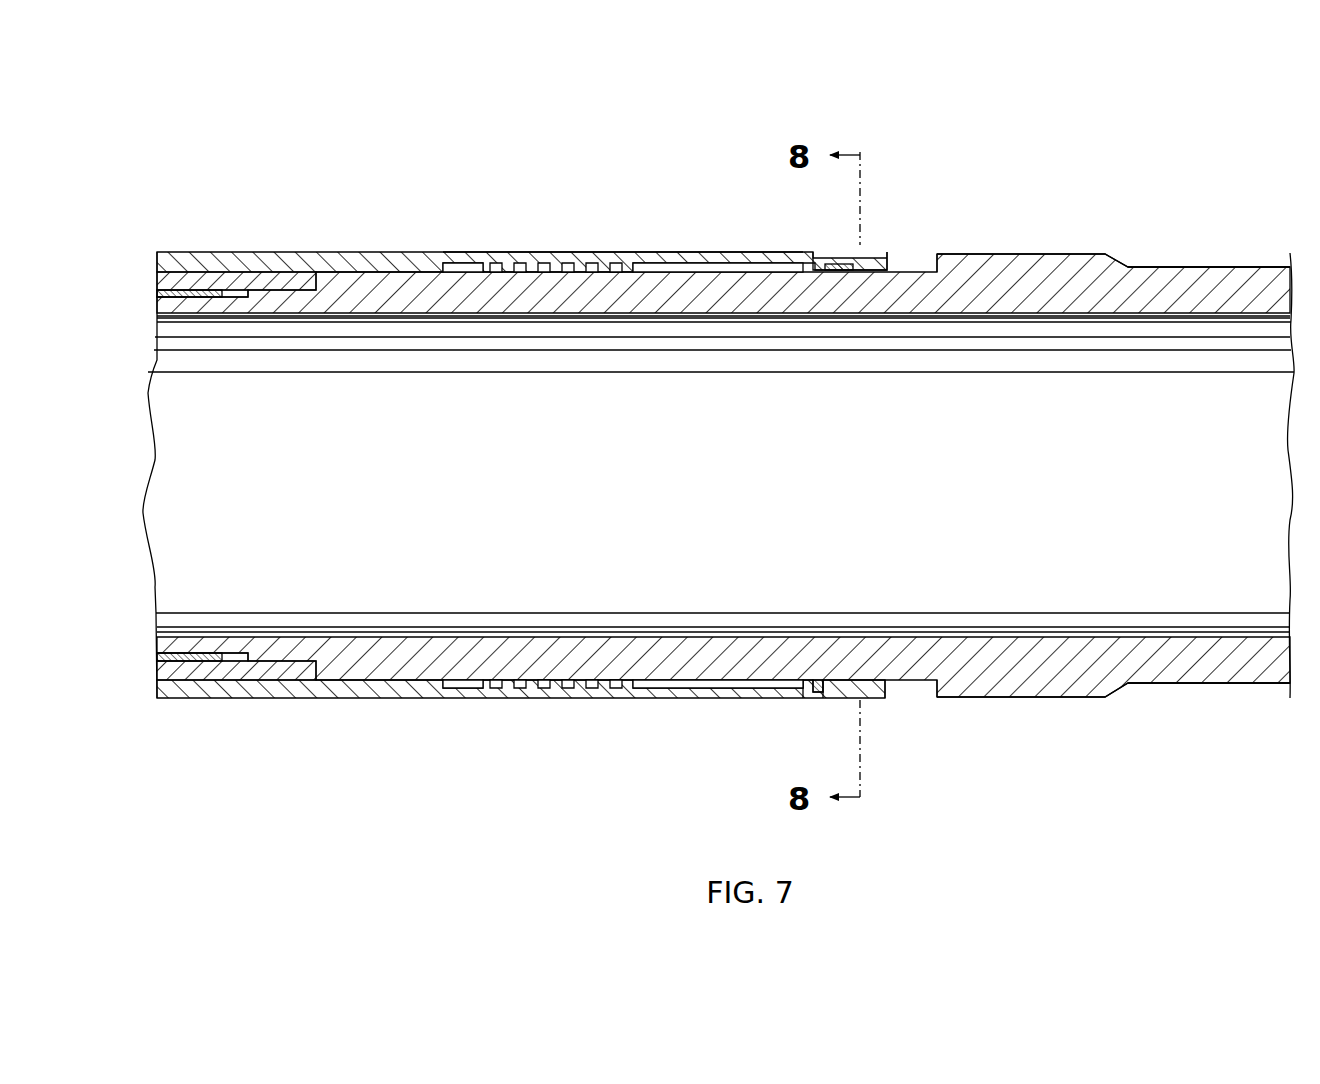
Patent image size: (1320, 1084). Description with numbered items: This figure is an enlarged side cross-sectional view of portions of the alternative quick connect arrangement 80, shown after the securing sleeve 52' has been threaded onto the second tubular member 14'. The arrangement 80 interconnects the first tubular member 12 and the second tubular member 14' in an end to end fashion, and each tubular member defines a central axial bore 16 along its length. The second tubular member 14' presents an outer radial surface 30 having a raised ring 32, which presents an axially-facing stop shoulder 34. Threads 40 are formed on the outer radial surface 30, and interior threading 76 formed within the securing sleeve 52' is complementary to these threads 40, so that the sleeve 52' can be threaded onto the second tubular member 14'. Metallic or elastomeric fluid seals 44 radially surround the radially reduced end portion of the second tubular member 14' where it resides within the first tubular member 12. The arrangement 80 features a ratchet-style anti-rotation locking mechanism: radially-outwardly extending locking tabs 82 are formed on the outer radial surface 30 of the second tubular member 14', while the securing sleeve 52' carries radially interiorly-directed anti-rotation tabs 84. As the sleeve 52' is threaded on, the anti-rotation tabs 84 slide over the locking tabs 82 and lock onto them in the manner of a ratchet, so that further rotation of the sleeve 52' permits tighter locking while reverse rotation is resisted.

The first tubular member 12 is at (205, 268).
The central axial bore 16 is at (393, 320).
The interior threading 76 is at (545, 263).
The securing sleeve 52' is at (623, 209).
The locking tabs 82 is at (840, 263).
The stop shoulder 34 is at (936, 252).
The raised ring 32 is at (1030, 252).
The second tubular member 14' is at (953, 488).
The quick connect arrangement 80 is at (748, 130).
The fluid seals 44 is at (198, 662).
The outer radial surface 30 is at (380, 682).
The threads 40 is at (542, 700).
The anti-rotation tabs 84 is at (895, 697).